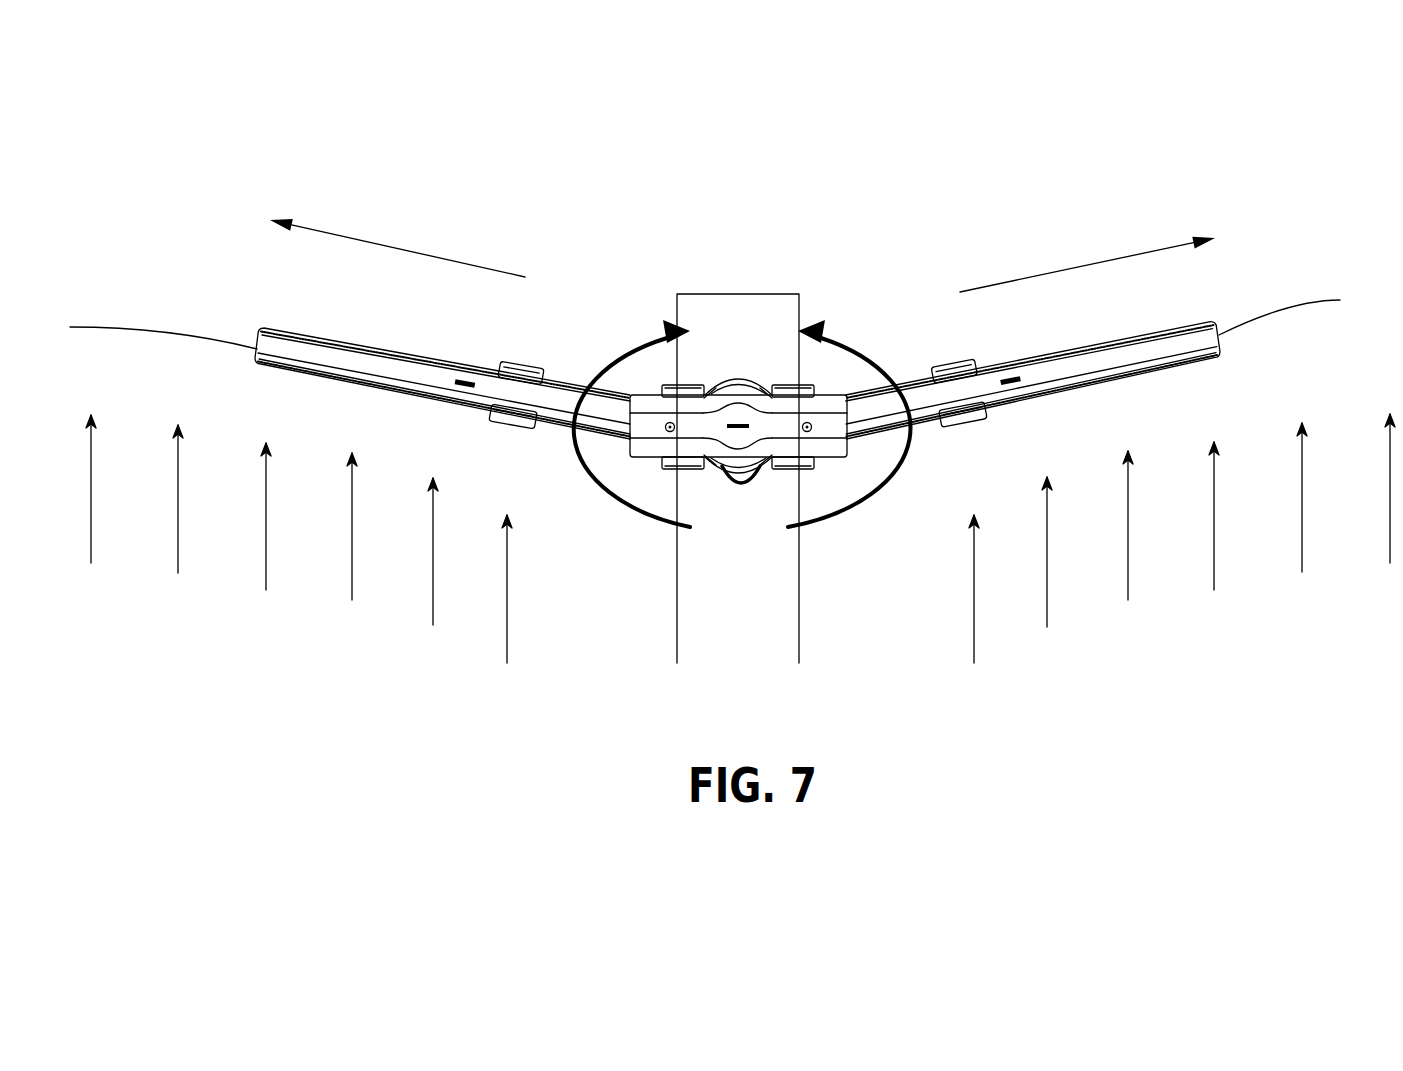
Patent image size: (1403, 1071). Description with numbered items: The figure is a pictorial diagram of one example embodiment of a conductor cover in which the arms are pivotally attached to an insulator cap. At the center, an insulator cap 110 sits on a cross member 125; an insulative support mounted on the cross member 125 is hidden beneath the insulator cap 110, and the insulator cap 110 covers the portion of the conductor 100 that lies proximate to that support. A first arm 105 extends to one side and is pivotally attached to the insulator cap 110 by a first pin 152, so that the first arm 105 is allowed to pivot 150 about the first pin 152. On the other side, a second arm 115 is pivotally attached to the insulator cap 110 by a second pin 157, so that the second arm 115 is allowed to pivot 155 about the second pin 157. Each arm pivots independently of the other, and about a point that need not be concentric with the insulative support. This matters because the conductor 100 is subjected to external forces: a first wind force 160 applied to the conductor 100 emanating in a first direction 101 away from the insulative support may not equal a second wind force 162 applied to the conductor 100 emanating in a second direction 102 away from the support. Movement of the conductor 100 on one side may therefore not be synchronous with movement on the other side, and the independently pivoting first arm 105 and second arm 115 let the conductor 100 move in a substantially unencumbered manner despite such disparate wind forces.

The conductor 100 is at (130, 326).
The first direction 101 is at (399, 247).
The second direction 102 is at (1137, 253).
The first arm 105 is at (313, 331).
The insulator cap 110 is at (750, 381).
The second arm 115 is at (1115, 332).
The cross member 125 is at (750, 293).
The pivot 150 is at (608, 347).
The first pin 152 is at (666, 432).
The pivot 155 is at (873, 347).
The second pin 157 is at (812, 432).
The first wind force 160 is at (508, 608).
The second wind force 162 is at (973, 588).